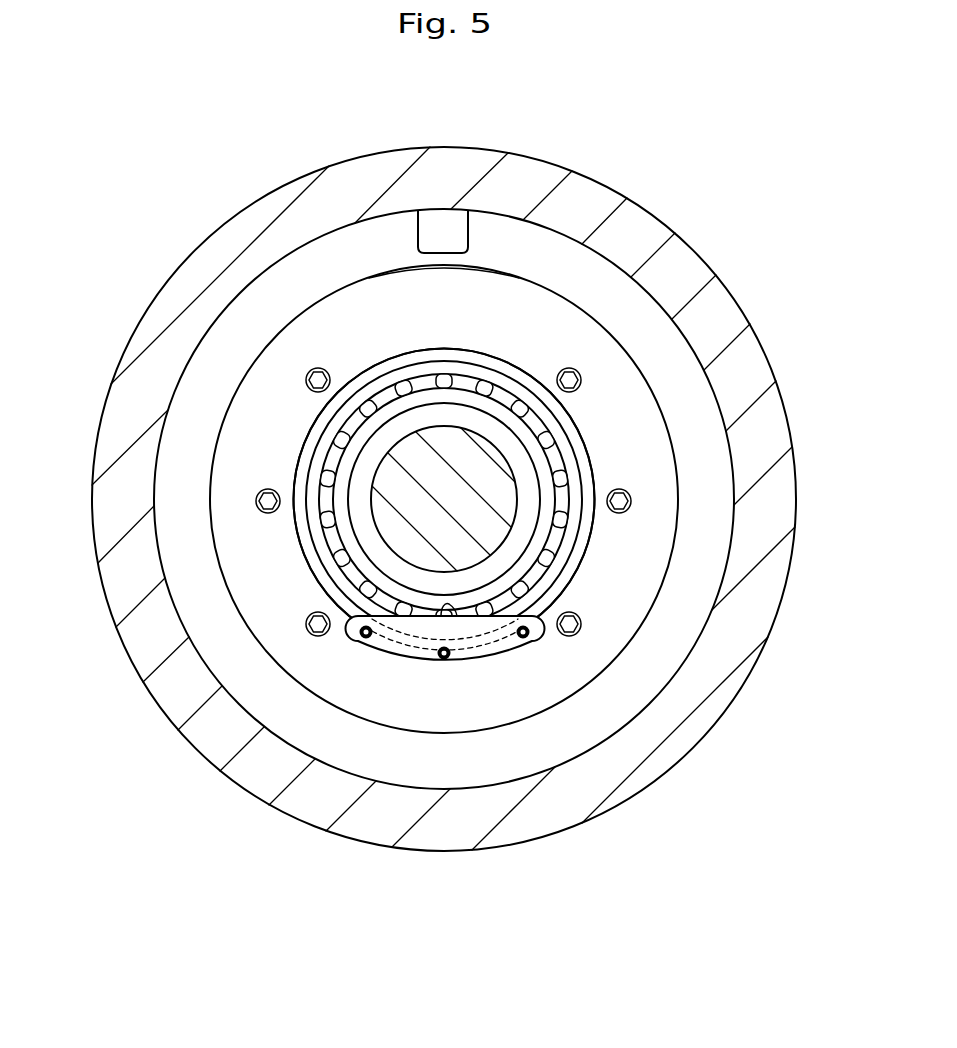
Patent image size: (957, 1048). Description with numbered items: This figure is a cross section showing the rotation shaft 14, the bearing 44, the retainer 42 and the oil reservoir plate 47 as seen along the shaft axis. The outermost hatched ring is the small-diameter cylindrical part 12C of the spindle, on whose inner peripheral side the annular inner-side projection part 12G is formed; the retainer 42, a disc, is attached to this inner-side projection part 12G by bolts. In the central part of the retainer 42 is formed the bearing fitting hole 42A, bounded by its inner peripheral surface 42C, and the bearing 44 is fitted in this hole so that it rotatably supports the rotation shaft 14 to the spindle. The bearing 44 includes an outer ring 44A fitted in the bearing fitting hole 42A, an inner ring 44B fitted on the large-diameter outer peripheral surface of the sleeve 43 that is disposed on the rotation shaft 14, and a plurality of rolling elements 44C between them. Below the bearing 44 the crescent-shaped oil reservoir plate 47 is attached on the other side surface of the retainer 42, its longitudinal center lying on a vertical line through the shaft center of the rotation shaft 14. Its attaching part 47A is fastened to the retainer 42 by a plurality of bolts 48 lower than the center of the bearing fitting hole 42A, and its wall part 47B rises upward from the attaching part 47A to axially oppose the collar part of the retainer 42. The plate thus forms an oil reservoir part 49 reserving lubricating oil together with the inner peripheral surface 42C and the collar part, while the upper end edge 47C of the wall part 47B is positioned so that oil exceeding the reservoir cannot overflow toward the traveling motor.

The small-diameter cylindrical part 12C is at (567, 207).
The inner-side projection part 12G is at (300, 297).
The rotation shaft 14 is at (444, 483).
The retainer 42 is at (618, 555).
The bearing fitting hole 42A is at (550, 577).
The inner peripheral surface 42C is at (444, 499).
The sleeve 43 is at (523, 473).
The bearing 44 is at (314, 425).
The outer ring 44A is at (311, 478).
The inner ring 44B is at (346, 537).
The rolling elements 44C is at (444, 381).
The oil reservoir plate 47 is at (442, 668).
The attaching part 47A is at (426, 650).
The wall part 47B is at (475, 628).
The upper end edge 47C is at (460, 616).
The bolts 48 is at (365, 637).
The oil reservoir part 49 is at (432, 640).